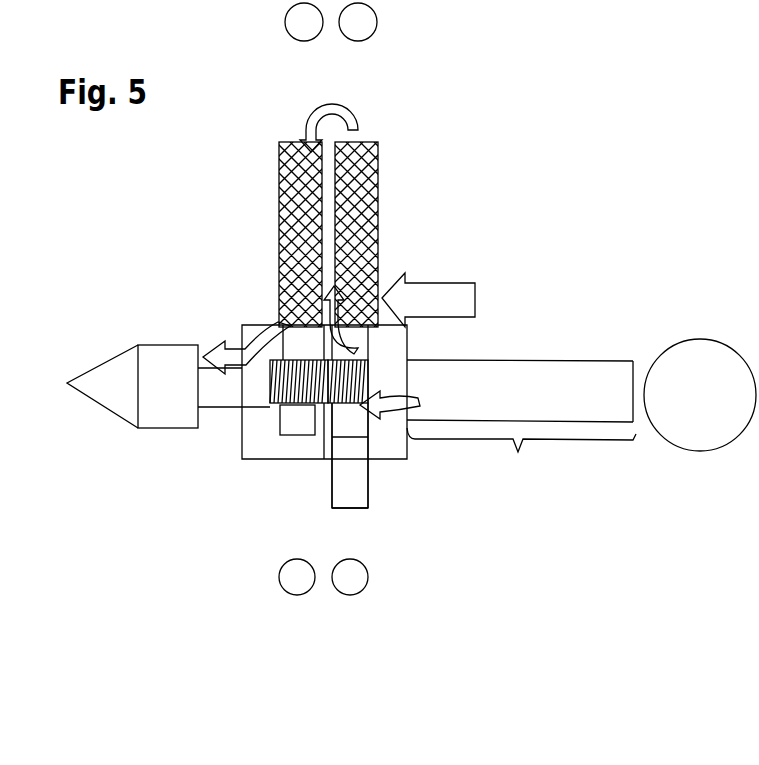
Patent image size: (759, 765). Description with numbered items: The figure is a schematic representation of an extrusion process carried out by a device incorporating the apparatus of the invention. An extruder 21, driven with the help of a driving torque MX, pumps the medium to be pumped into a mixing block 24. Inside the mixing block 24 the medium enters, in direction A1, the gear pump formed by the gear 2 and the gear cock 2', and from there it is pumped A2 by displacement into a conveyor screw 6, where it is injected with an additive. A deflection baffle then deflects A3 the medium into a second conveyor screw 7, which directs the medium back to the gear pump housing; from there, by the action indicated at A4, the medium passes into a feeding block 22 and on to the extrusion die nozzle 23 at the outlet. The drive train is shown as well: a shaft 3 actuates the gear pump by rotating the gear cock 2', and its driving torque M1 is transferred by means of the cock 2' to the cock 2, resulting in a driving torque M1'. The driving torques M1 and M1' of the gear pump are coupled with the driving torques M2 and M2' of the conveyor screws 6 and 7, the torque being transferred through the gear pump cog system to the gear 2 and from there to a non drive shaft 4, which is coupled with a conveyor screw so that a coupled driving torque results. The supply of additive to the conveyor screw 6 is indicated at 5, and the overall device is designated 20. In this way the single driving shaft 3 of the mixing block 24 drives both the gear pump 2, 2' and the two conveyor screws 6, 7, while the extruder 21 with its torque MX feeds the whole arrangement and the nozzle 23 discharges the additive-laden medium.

The gear 2 is at (280, 438).
The gear cock 2' is at (340, 438).
The shaft 3 is at (362, 487).
The non drive shaft 4 is at (297, 423).
The CO2 supply 5 is at (455, 283).
The conveyor screw 6 is at (378, 183).
The second conveyor screw 7 is at (279, 175).
The mixing device 20 is at (527, 172).
The extruder 21 is at (521, 421).
The feeding block 22 is at (242, 435).
The extrusion die nozzle 23 is at (198, 435).
The mixing block 24 is at (405, 615).
The entry of the medium A1 is at (418, 400).
The pumping by displacement A2 is at (370, 270).
The deflection A3 is at (330, 104).
The second gear pump actuation A4 is at (232, 322).
The driving torque of the shaft M1 is at (350, 577).
The driving torque of the cock 2 M1' is at (297, 577).
The driving torque of the conveyor screw M2 is at (358, 22).
The driving torque of the second conveyor screw M2' is at (304, 22).
The driving torque of the extruder MX is at (700, 395).